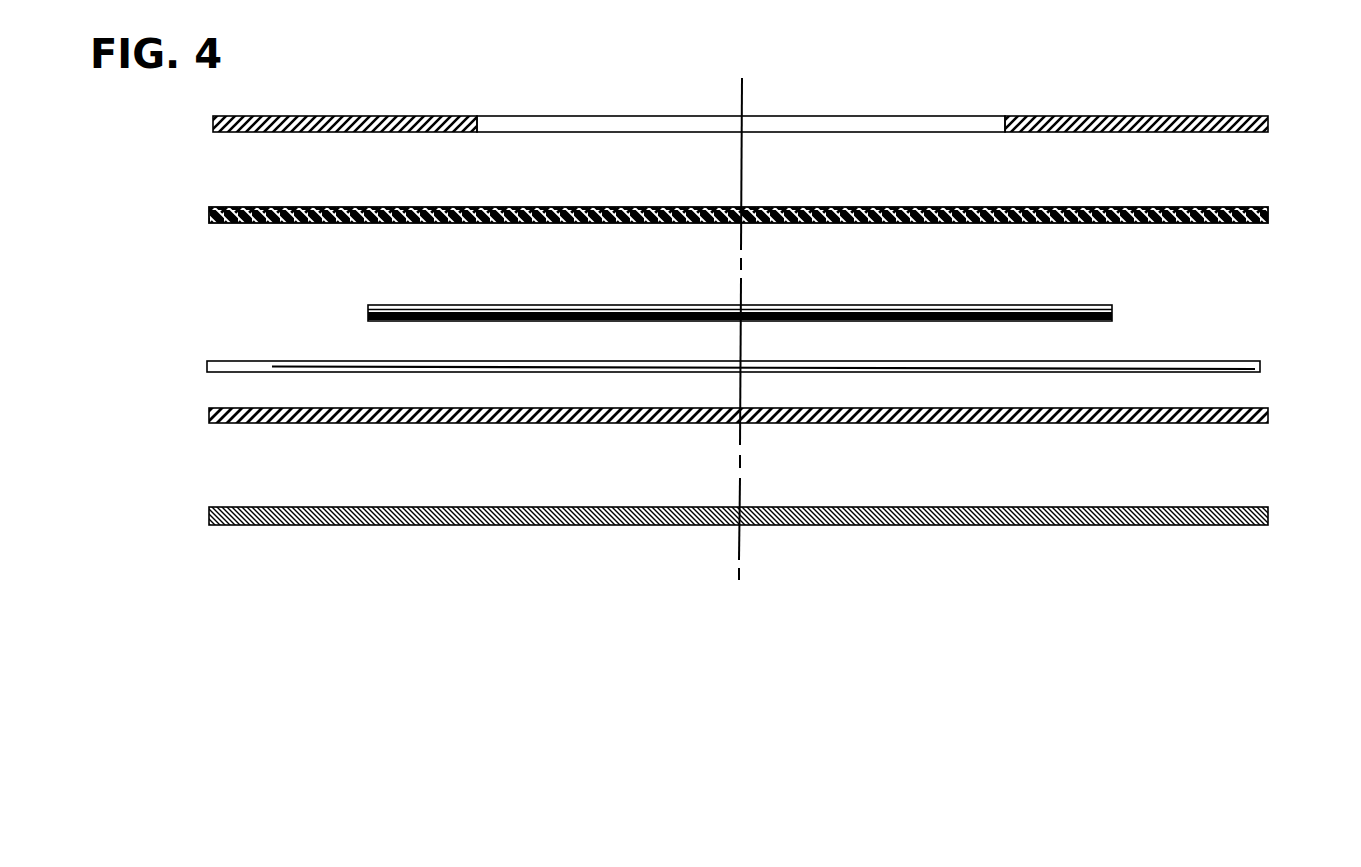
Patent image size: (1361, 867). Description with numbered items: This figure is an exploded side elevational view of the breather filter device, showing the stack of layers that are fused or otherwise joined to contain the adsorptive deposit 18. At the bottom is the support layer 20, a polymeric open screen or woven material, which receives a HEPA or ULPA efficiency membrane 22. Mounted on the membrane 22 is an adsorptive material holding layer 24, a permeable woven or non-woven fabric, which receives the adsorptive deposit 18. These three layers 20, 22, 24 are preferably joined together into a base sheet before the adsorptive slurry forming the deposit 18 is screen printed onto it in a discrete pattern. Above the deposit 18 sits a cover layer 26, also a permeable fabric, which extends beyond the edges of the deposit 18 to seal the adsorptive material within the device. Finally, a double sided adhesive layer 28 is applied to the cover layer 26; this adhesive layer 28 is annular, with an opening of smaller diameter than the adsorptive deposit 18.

The adsorptive deposit 18 is at (1115, 312).
The support layer 20 is at (207, 513).
The HEPA or ULPA efficiency membrane 22 is at (207, 417).
The adsorptive material holding layer 24 is at (676, 383).
The cover layer 26 is at (207, 215).
The double sided adhesive layer 28 is at (211, 126).